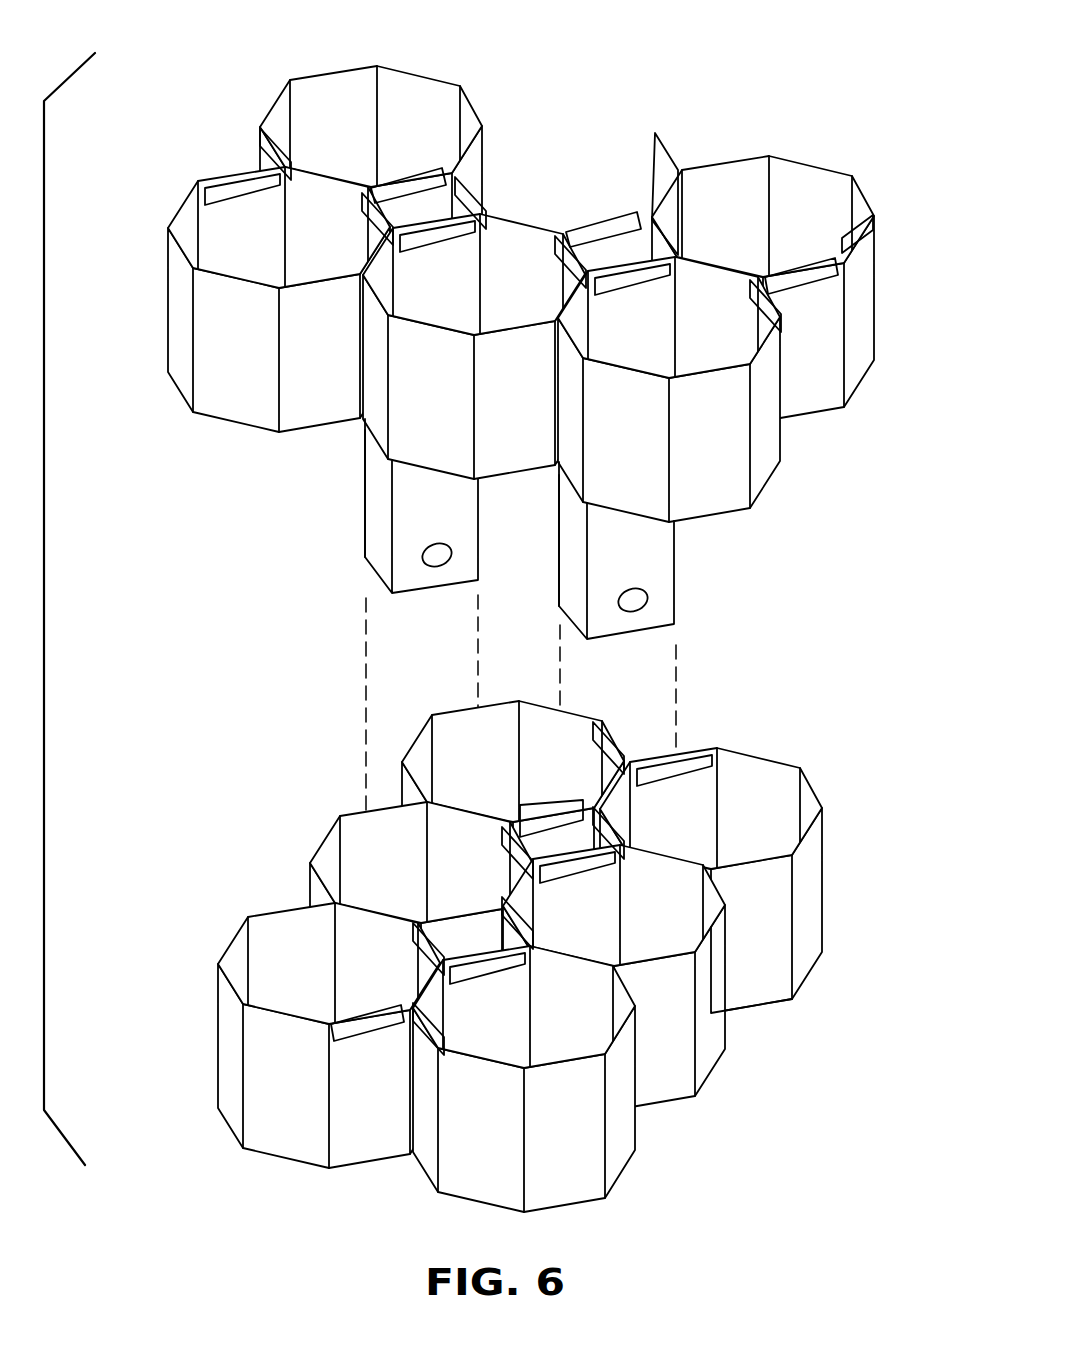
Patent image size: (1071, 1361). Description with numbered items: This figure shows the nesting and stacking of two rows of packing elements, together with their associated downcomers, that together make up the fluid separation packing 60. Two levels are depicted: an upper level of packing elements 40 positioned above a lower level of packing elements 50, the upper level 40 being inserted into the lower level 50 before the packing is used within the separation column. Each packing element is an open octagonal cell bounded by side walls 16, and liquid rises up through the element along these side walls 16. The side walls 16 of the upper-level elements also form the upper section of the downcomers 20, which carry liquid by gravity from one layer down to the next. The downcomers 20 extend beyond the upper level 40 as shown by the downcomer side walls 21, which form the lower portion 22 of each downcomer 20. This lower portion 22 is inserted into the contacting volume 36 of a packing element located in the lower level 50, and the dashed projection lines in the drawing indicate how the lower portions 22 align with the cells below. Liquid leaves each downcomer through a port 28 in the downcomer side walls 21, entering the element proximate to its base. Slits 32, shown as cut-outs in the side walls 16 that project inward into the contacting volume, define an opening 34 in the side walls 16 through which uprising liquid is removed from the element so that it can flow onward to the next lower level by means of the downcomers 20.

The side walls 16 is at (620, 1157).
The downcomer 20 is at (422, 212).
The downcomer side walls 21 is at (366, 476).
The lower portion of the downcomer 22 is at (545, 529).
The port 28 is at (428, 548).
The slits 32 is at (733, 273).
The opening 34 is at (648, 220).
The contacting volume 36 is at (755, 810).
The upper level of packing elements 40 is at (474, 352).
The lower level of packing elements 50 is at (482, 956).
The fluid separation packing 60 is at (885, 570).